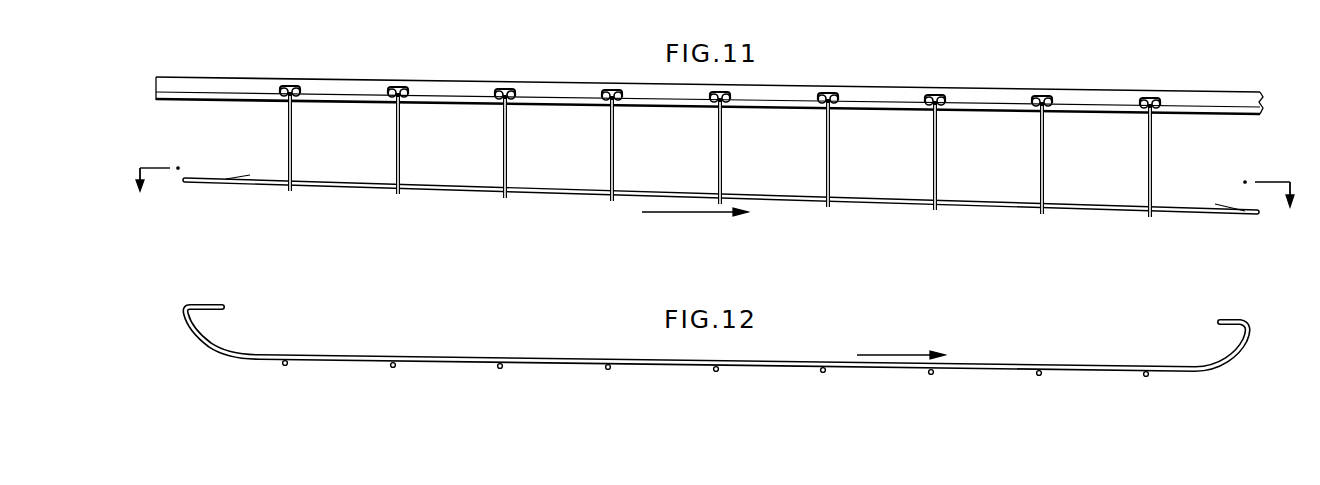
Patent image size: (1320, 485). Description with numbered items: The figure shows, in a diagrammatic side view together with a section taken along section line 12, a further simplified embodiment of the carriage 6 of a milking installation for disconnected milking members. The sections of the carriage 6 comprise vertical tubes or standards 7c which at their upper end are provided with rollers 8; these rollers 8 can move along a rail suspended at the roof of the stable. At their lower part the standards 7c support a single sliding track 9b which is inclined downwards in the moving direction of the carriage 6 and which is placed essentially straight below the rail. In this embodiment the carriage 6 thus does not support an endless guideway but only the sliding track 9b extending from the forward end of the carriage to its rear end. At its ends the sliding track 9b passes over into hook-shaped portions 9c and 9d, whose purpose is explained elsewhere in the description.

In FIG. 11, the carriage 6 is at (1117, 83).
In FIG. 11, the vertical tubes or standards 7c is at (830, 165).
In FIG. 12, the vertical tubes or standards 7c is at (717, 370).
In FIG. 11, the rollers 8 is at (604, 91).
In FIG. 11, the sliding track 9b is at (540, 190).
In FIG. 12, the sliding track 9b is at (567, 356).
In FIG. 11, the hook-shaped portion 9c is at (215, 178).
In FIG. 12, the hook-shaped portion 9c is at (224, 310).
In FIG. 11, the hook-shaped portion 9d is at (1228, 206).
In FIG. 12, the hook-shaped portion 9d is at (1216, 323).
In FIG. 11, the section line 12 is at (716, 201).